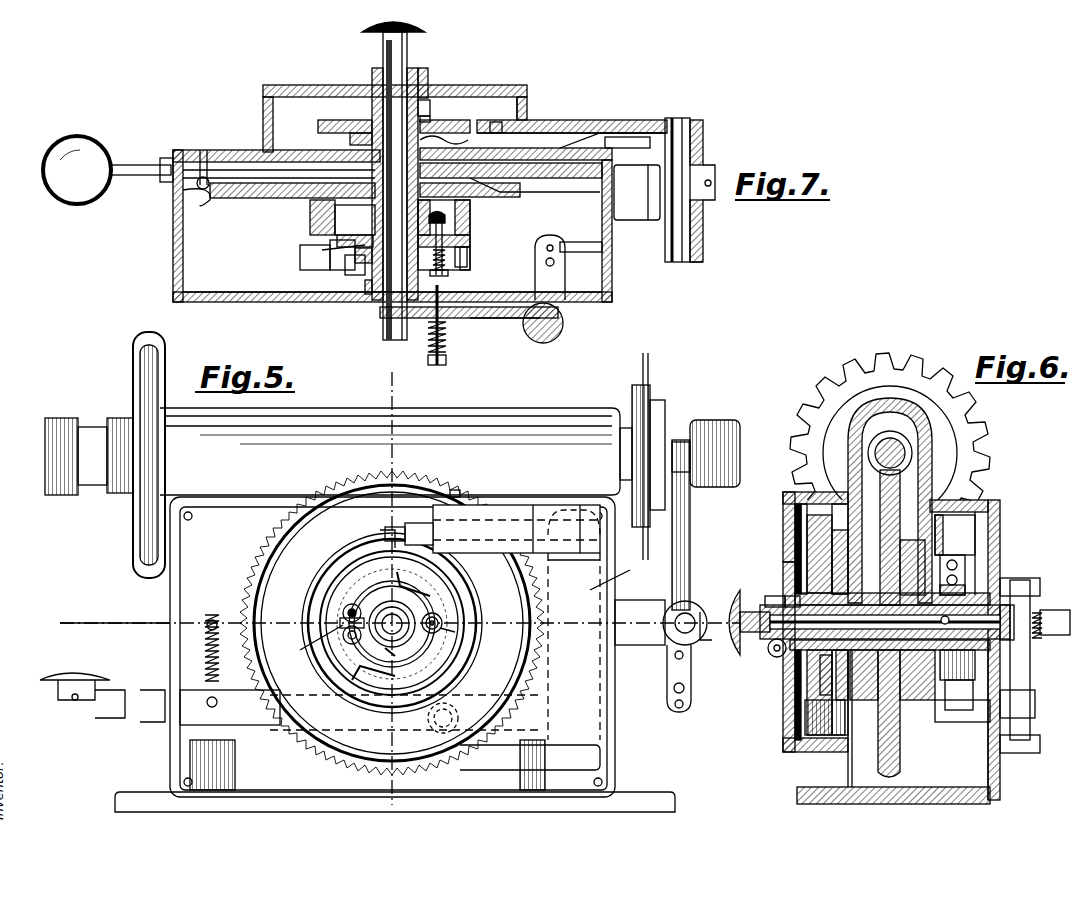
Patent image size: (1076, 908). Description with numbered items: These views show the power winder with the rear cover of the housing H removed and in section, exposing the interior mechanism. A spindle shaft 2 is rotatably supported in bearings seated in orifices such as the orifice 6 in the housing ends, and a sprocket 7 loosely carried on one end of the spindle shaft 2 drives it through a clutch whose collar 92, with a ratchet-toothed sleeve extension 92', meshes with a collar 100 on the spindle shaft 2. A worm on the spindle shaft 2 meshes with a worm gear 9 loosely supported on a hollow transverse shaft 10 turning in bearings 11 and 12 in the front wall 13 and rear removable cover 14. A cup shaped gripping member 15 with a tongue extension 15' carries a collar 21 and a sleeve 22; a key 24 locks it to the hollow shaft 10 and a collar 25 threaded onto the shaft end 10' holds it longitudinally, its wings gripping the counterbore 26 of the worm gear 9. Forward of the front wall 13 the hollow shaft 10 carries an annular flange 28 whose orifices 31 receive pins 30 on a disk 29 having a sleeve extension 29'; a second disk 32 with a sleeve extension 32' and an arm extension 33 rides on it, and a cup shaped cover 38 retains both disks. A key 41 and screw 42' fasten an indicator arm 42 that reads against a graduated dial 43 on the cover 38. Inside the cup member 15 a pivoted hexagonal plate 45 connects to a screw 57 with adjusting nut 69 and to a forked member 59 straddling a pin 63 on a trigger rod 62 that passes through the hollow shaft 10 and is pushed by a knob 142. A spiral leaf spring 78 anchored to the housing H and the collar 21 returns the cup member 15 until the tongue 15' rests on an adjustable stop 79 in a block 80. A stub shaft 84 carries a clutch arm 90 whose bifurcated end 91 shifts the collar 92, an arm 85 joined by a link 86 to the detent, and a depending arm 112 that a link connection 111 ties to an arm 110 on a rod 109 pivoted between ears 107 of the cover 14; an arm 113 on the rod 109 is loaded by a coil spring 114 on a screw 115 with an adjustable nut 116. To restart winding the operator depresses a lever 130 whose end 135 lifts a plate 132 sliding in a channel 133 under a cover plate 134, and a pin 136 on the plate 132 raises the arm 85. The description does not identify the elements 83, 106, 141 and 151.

In FIG. 6, the spindle shaft 2 is at (900, 455).
In FIG. 5, the orifice 6 is at (392, 400).
In FIG. 5, the sprocket 7 is at (658, 360).
In FIG. 6, the sprocket 7 is at (900, 368).
In FIG. 7, the worm gear 9 is at (270, 200).
In FIG. 5, the worm gear 9 is at (330, 752).
In FIG. 6, the worm gear 9 is at (900, 762).
In FIG. 7, the hollow transverse shaft 10 is at (398, 177).
In FIG. 6, the hollow transverse shaft 10 is at (795, 619).
In FIG. 7, the threaded end of hollow shaft 10' is at (337, 314).
In FIG. 7, the bearing 11 is at (450, 140).
In FIG. 7, the bearing 12 is at (368, 295).
In FIG. 7, the front wall 13 is at (205, 150).
In FIG. 7, the rear removable cover 14 is at (278, 300).
In FIG. 6, the rear removable cover 14 is at (1000, 515).
In FIG. 7, the cup shaped gripping member 15 is at (473, 237).
In FIG. 5, the cup shaped gripping member 15 is at (422, 620).
In FIG. 6, the cup shaped gripping member 15 is at (902, 537).
In FIG. 5, the tongue extension 15' is at (370, 536).
In FIG. 7, the collar 21 is at (345, 270).
In FIG. 5, the collar 21 is at (448, 600).
In FIG. 6, the collar 21 is at (980, 722).
In FIG. 7, the sleeve 22 is at (447, 278).
In FIG. 6, the key 24 is at (965, 580).
In FIG. 7, the collar 25 is at (470, 250).
In FIG. 7, the counterbore 26 is at (310, 225).
In FIG. 7, the annular flange 28 is at (350, 138).
In FIG. 6, the annular flange 28 is at (850, 668).
In FIG. 7, the disk 29 is at (395, 114).
In FIG. 6, the disk 29 is at (830, 683).
In FIG. 6, the sleeve extension 29' is at (790, 675).
In FIG. 6, the pins 30 is at (810, 560).
In FIG. 6, the orifices 31 is at (795, 540).
In FIG. 7, the second disk member 32 is at (457, 88).
In FIG. 7, the sleeve extension 32' is at (457, 75).
In FIG. 6, the arm extension 33 is at (801, 545).
In FIG. 7, the cup shaped cover 38 is at (527, 97).
In FIG. 6, the key 41 is at (770, 597).
In FIG. 7, the indicator arm 42 is at (426, 67).
In FIG. 6, the indicator arm 42 is at (773, 588).
In FIG. 6, the screw 42' is at (762, 653).
In FIG. 6, the graduated dial 43 is at (783, 735).
In FIG. 7, the hexagonal shaped plate 45 is at (448, 225).
In FIG. 6, the hexagonal shaped plate 45 is at (918, 700).
In FIG. 7, the screw 57 is at (470, 245).
In FIG. 5, the screw 57 is at (440, 618).
In FIG. 7, the forked shaped member 59 is at (330, 250).
In FIG. 5, the forked shaped member 59 is at (343, 631).
In FIG. 7, the trigger rod 62 is at (383, 58).
In FIG. 5, the trigger rod 62 is at (392, 618).
In FIG. 6, the trigger rod 62 is at (775, 628).
In FIG. 7, the pin 63 is at (360, 264).
In FIG. 5, the pin 63 is at (392, 655).
In FIG. 6, the pin 63 is at (1003, 643).
In FIG. 5, the adjusting nut 69 is at (445, 630).
In FIG. 7, the spiral leaf spring 78 is at (300, 260).
In FIG. 5, the spiral leaf spring 78 is at (312, 646).
In FIG. 6, the spiral leaf spring 78 is at (958, 715).
In FIG. 5, the adjustable stop 79 is at (418, 525).
In FIG. 6, the adjustable stop 79 is at (950, 525).
In FIG. 5, the block 80 is at (495, 515).
In FIG. 7, the bearing block 83 is at (703, 150).
In FIG. 5, the bearing block 83 is at (638, 615).
In FIG. 7, the stub shaft 84 is at (678, 122).
In FIG. 5, the stub shaft 84 is at (677, 630).
In FIG. 7, the arm 85 is at (540, 120).
In FIG. 7, the link 86 is at (496, 120).
In FIG. 7, the clutch arm 90 is at (650, 195).
In FIG. 5, the clutch arm 90 is at (680, 565).
In FIG. 5, the bifurcated end 91 is at (690, 455).
In FIG. 5, the collar 92 is at (657, 453).
In FIG. 5, the sleeve extension 92' is at (680, 455).
In FIG. 5, the collar 100 is at (740, 440).
In FIG. 5, the hand knob 106 is at (68, 418).
In FIG. 6, the ears 107 is at (1035, 578).
In FIG. 7, the rod 109 is at (550, 340).
In FIG. 6, the rod 109 is at (1030, 600).
In FIG. 7, the arm 110 is at (560, 285).
In FIG. 6, the arm 110 is at (1036, 700).
In FIG. 7, the link connection 111 is at (572, 242).
In FIG. 7, the depending arm 112 is at (703, 250).
In FIG. 5, the depending arm 112 is at (690, 672).
In FIG. 6, the depending arm 112 is at (712, 637).
In FIG. 7, the arm 113 is at (500, 318).
In FIG. 6, the arm 113 is at (1030, 618).
In FIG. 7, the coil spring 114 is at (447, 343).
In FIG. 6, the coil spring 114 is at (1045, 632).
In FIG. 7, the screw 115 is at (430, 318).
In FIG. 7, the adjustable nut 116 is at (446, 362).
In FIG. 7, the lever 130 is at (165, 160).
In FIG. 5, the lever 130 is at (270, 725).
In FIG. 6, the lever 130 is at (850, 765).
In FIG. 7, the plate 132 is at (575, 180).
In FIG. 5, the plate 132 is at (575, 700).
In FIG. 7, the channel 133 is at (620, 133).
In FIG. 7, the cover plate 134 is at (627, 139).
In FIG. 5, the cover plate 134 is at (616, 569).
In FIG. 5, the lever end 135 is at (568, 752).
In FIG. 7, the pin 136 is at (568, 120).
In FIG. 5, the spring 141 is at (225, 615).
In FIG. 7, the knob 142 is at (420, 28).
In FIG. 5, the pin 151 is at (455, 706).
In FIG. 7, the housing H is at (173, 228).
In FIG. 5, the housing H is at (500, 408).
In FIG. 6, the housing H is at (870, 425).